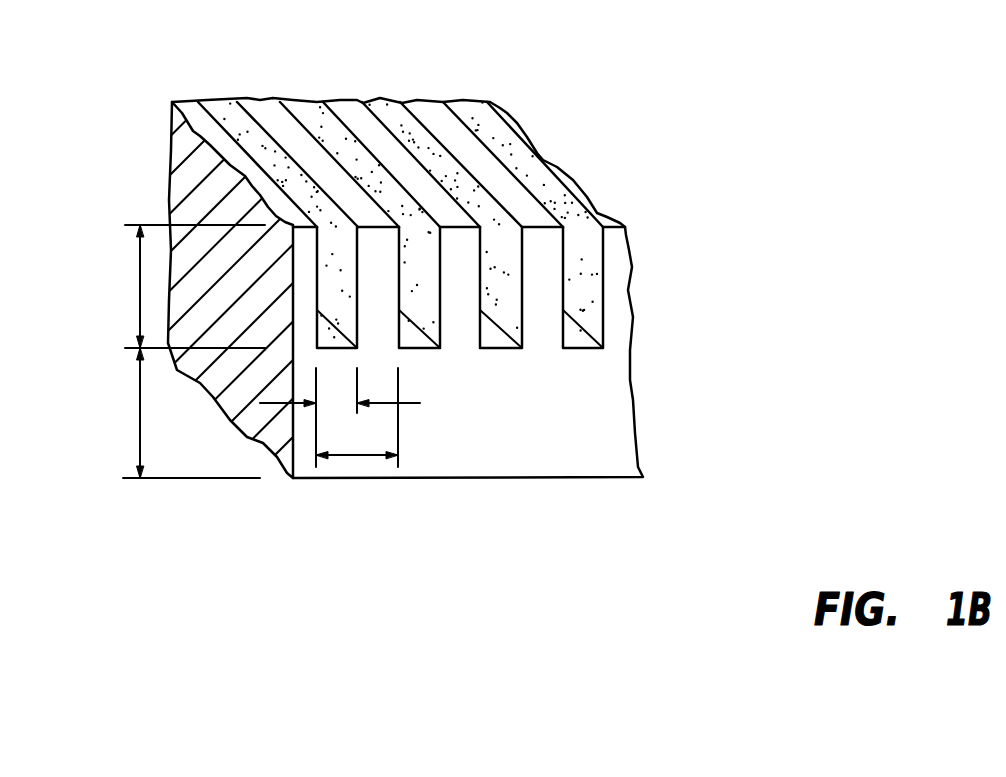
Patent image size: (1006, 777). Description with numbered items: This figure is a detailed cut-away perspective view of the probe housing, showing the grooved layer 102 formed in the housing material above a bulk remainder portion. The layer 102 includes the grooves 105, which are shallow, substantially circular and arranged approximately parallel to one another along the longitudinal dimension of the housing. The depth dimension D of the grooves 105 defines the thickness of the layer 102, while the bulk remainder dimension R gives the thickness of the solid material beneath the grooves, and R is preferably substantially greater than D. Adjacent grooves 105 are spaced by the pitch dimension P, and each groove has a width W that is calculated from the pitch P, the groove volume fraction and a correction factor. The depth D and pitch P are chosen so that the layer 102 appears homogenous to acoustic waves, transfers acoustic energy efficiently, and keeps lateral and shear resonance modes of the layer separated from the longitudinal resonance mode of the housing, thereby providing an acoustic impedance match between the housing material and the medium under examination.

The layer 102 is at (334, 288).
The grooves 105 is at (366, 182).
The depth dimension D is at (189, 286).
The bulk remainder dimension R is at (186, 413).
The width of grooves W is at (340, 417).
The pitch dimension P is at (357, 417).